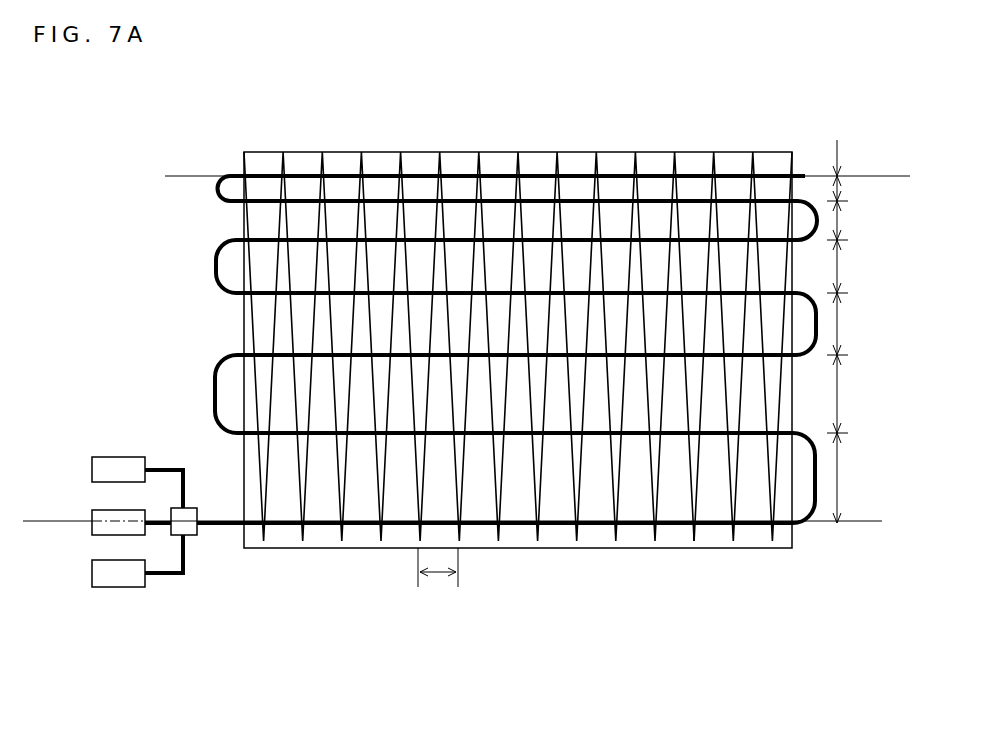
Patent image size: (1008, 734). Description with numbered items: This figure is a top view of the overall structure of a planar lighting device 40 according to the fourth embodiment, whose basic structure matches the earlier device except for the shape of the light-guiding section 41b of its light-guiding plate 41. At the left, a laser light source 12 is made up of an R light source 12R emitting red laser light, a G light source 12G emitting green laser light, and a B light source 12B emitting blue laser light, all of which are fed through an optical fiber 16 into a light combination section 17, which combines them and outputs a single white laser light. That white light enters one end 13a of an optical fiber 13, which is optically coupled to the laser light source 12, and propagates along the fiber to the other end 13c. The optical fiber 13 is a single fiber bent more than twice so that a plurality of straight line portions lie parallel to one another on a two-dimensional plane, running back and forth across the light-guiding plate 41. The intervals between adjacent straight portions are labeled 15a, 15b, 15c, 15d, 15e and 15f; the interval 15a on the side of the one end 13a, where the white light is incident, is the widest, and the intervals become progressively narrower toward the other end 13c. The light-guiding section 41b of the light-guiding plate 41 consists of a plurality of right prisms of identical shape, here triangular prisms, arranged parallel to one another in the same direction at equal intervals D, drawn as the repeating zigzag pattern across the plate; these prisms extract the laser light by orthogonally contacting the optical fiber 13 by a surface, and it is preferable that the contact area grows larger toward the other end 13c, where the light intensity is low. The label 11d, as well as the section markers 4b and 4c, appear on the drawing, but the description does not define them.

The planar lighting device 40 is at (186, 105).
The light-guiding plate 41 is at (243, 157).
The light-guiding section 41b is at (655, 535).
The fiber end face 11d is at (694, 527).
The optical fiber 13 is at (218, 362).
The one end 13a is at (203, 527).
The other end 13c is at (806, 172).
The laser light source 12 is at (92, 509).
The R light source 12R is at (135, 457).
The G light source 12G is at (135, 510).
The B light source 12B is at (111, 563).
The optical fiber 16 is at (183, 574).
The light combination section 17 is at (188, 508).
The interval 15a is at (857, 478).
The interval 15b is at (854, 394).
The interval 15c is at (853, 324).
The interval 15d is at (854, 266).
The interval 15e is at (854, 221).
The interval 15f is at (852, 170).
The section line 4b- 4b is at (36, 524).
The section line 4c- 4c is at (185, 179).
The equal intervals D is at (438, 577).